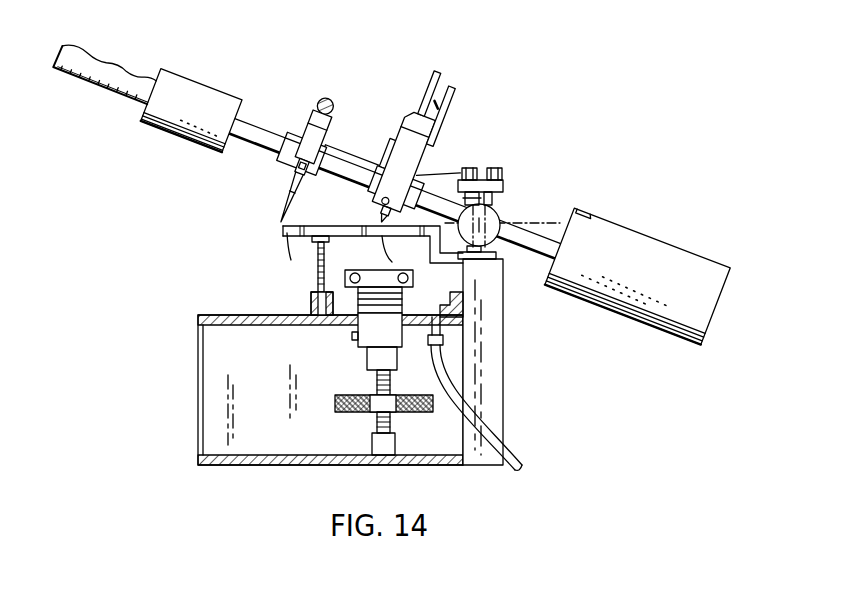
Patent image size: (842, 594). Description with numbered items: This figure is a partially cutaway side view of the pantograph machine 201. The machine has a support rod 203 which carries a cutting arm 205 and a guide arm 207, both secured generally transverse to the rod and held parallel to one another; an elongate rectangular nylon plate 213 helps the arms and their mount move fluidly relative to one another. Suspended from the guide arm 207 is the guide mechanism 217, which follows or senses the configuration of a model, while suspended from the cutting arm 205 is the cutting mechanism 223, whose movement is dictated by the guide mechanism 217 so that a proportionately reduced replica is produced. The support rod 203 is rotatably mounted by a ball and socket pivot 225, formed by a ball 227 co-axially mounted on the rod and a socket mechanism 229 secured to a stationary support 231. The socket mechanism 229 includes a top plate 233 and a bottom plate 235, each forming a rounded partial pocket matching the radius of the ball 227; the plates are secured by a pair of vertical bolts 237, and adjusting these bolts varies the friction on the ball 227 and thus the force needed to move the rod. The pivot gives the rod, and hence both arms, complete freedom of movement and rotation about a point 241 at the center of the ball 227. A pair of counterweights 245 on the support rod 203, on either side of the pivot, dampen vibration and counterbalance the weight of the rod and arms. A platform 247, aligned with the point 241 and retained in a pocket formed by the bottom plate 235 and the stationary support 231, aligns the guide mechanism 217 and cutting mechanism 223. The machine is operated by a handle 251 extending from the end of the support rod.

The pantograph machine 201 is at (600, 164).
The support rod 203 is at (253, 122).
The cutting arm 205 is at (395, 143).
The guide arm 207 is at (390, 117).
The nylon plate 213 is at (288, 133).
The guide mechanism 217 is at (288, 168).
The cutting mechanism 223 is at (382, 201).
The ball and socket pivot 225 is at (490, 160).
The ball 227 is at (500, 215).
The socket mechanism 229 is at (508, 183).
The stationary support 231 is at (503, 362).
The top plate 233 is at (503, 190).
The bottom plate 235 is at (495, 259).
The vertical bolts 237 is at (470, 168).
The point 241 is at (497, 243).
The counterweights 245 is at (148, 122).
The platform 247 is at (283, 231).
The handle 251 is at (93, 56).